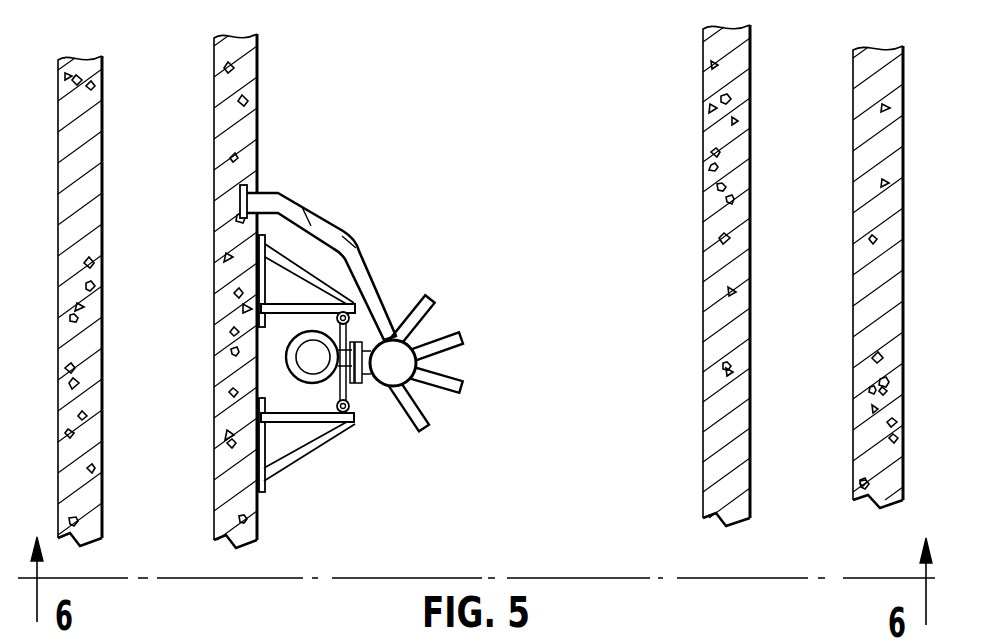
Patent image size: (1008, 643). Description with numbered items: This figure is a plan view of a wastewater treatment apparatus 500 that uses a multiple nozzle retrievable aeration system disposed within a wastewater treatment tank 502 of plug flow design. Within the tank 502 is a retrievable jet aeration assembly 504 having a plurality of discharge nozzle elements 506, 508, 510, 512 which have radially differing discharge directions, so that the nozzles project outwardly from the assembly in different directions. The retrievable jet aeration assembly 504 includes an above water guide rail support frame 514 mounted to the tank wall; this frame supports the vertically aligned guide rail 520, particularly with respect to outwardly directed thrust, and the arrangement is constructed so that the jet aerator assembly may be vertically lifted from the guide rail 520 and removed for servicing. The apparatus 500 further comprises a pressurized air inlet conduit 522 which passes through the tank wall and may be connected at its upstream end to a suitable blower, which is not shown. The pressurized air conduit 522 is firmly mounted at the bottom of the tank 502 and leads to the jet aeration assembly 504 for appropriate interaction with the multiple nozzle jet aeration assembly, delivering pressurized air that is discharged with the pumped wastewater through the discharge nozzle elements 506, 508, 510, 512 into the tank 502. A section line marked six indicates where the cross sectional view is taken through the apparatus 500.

The wastewater treatment apparatus 500 is at (389, 266).
The wastewater treatment tank 502 is at (258, 117).
The retrievable jet aeration assembly 504 is at (384, 340).
The discharge nozzle element 506 is at (424, 317).
The discharge nozzle element 508 is at (465, 350).
The discharge nozzle element 510 is at (447, 395).
The discharge nozzle element 512 is at (428, 417).
The above water guide rail support frame 514 is at (298, 268).
The guide rail 520 is at (349, 407).
The pressurized air inlet conduit 522 is at (302, 211).